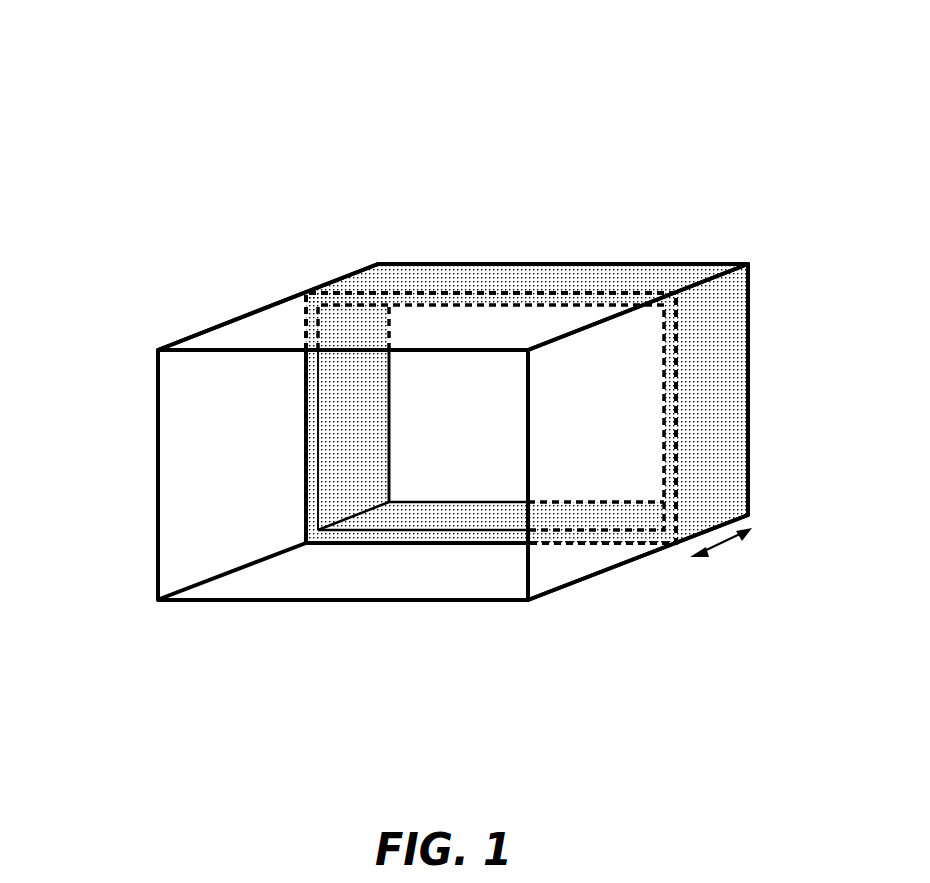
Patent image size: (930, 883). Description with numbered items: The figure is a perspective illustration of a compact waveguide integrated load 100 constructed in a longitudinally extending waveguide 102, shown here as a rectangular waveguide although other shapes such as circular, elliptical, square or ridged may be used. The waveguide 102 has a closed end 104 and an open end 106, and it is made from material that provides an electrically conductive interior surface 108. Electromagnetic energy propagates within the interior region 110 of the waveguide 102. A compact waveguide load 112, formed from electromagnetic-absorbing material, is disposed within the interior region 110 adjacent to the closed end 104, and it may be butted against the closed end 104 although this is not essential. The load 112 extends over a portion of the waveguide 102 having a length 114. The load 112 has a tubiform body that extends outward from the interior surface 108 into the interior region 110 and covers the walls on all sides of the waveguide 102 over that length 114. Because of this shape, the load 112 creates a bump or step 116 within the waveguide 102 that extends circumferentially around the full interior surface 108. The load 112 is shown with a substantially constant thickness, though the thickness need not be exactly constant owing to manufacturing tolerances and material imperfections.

The compact waveguide integrated load 100 is at (128, 65).
The waveguide 102 is at (157, 577).
The closed end 104 is at (778, 368).
The open end 106 is at (130, 466).
The electrically conductive interior surface 108 is at (398, 582).
The interior region 110 is at (298, 568).
The compact waveguide load 112 is at (414, 280).
The length 114 is at (724, 546).
The step 116 is at (306, 403).